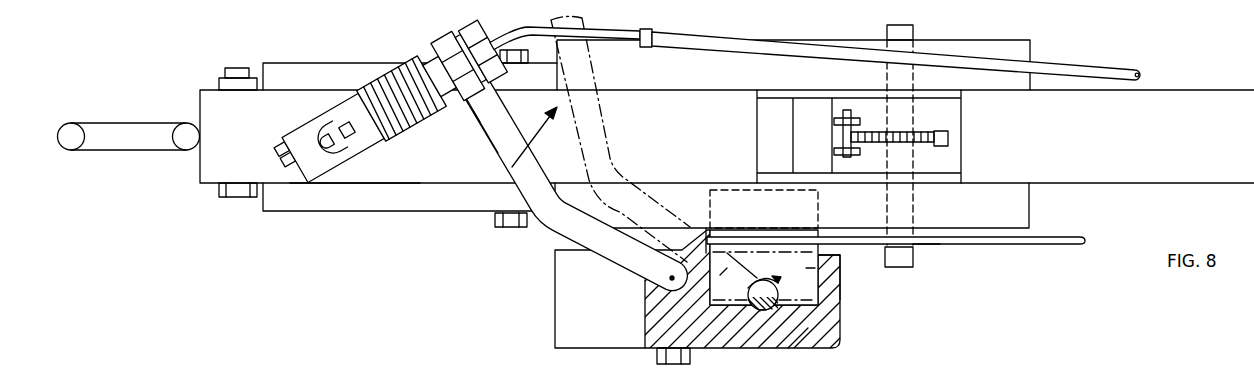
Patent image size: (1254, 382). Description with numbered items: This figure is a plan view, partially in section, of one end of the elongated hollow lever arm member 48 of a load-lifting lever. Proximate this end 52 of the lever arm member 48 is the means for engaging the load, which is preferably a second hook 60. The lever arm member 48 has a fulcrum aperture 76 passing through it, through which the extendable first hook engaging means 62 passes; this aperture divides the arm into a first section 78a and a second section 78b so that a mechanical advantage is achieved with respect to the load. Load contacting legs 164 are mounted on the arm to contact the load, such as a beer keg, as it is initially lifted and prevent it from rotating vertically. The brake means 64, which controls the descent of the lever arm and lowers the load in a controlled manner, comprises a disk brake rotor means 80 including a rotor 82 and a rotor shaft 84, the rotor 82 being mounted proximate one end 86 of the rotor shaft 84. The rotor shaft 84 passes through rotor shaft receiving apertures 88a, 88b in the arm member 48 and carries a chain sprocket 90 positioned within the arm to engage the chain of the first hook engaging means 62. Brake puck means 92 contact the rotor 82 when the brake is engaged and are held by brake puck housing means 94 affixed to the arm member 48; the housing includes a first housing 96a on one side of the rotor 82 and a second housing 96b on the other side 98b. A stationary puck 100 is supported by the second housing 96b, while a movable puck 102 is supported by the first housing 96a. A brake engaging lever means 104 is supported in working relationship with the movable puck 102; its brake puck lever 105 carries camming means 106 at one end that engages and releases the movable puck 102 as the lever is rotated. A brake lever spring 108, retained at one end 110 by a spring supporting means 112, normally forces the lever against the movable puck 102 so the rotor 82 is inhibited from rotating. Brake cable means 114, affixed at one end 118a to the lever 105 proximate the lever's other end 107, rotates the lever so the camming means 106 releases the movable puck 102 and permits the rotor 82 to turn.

The elongated hollow lever arm member 48 is at (1246, 89).
The one end of the lever arm member 52 is at (337, 186).
The second hook 60 is at (124, 124).
The extendable first hook engaging means 62 is at (838, 114).
The brake means 64 is at (552, 228).
The fulcrum aperture 76 is at (944, 160).
The first section 78a is at (380, 197).
The second section 78b is at (1170, 184).
The disk brake rotor means 80 is at (1082, 246).
The rotor 82 is at (838, 258).
The rotor shaft 84 is at (903, 124).
The one end of the rotor shaft 86 is at (918, 260).
The rotor shaft receiving aperture 88a is at (907, 180).
The rotor shaft receiving aperture 88b is at (893, 93).
The chain sprocket 90 is at (950, 137).
The brake puck means 92 is at (737, 202).
The brake puck housing means 94 is at (1018, 208).
The first housing 96a is at (773, 342).
The second housing 96b is at (652, 188).
The other side of the disk brake rotor 98b is at (882, 258).
The stationary puck 100 is at (817, 210).
The movable puck 102 is at (652, 326).
The brake engaging lever means 104 is at (492, 148).
The brake puck lever 105 is at (482, 124).
The camming means 106 is at (760, 311).
The other end of the brake puck lever 107 is at (457, 23).
The brake lever spring 108 is at (372, 76).
The one end of the brake lever spring 110 is at (427, 58).
The spring supporting means 112 is at (294, 130).
The brake cable means 114 is at (610, 38).
The one end of the brake cable 118a is at (533, 132).
The load contacting legs 164 is at (273, 62).